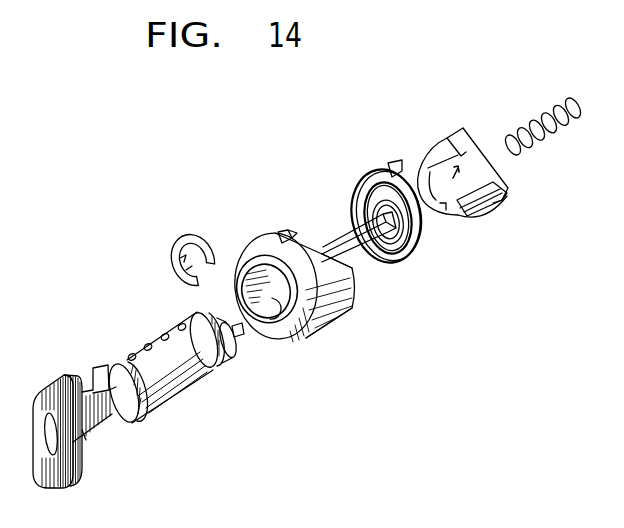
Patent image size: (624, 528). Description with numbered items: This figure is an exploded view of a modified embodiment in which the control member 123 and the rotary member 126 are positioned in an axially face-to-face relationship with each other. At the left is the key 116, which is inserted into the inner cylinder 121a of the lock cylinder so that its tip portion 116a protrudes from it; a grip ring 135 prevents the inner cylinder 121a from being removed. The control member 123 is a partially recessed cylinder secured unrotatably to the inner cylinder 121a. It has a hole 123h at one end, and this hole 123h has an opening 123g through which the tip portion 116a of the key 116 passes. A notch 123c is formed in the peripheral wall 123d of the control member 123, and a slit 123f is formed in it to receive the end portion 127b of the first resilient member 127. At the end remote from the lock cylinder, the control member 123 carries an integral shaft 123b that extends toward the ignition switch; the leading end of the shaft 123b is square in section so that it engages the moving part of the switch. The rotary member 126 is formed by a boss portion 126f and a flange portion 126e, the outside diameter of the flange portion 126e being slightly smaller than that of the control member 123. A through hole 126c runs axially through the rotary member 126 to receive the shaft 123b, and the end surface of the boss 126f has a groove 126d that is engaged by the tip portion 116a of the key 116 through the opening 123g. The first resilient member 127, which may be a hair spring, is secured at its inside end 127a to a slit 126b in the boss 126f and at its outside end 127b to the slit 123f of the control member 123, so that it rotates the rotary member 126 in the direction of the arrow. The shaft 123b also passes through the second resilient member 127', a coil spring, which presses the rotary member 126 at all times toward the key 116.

The key 116 is at (65, 468).
The tip portion of the key 116a is at (236, 338).
The inner cylinder 121a is at (155, 373).
The grip ring 135 is at (181, 245).
The control member 123 is at (324, 330).
The shaft 123b is at (350, 252).
The notch 123c is at (295, 232).
The peripheral wall 123d is at (336, 293).
The slit 123f is at (281, 237).
The opening 123g is at (276, 312).
The hole 123h is at (246, 286).
The first resilient member 127 is at (363, 209).
The inside end 127a is at (383, 206).
The end portion 127b is at (388, 168).
The second resilient member 127' is at (542, 117).
The rotary member 126 is at (452, 146).
The slit 126b is at (420, 160).
The through hole 126c is at (432, 174).
The groove 126d is at (444, 213).
The flange portion 126e is at (502, 198).
The boss portion 126f is at (452, 214).